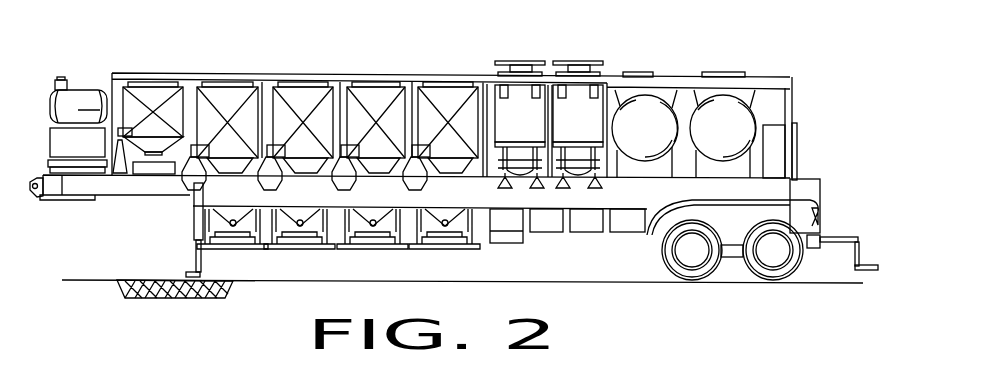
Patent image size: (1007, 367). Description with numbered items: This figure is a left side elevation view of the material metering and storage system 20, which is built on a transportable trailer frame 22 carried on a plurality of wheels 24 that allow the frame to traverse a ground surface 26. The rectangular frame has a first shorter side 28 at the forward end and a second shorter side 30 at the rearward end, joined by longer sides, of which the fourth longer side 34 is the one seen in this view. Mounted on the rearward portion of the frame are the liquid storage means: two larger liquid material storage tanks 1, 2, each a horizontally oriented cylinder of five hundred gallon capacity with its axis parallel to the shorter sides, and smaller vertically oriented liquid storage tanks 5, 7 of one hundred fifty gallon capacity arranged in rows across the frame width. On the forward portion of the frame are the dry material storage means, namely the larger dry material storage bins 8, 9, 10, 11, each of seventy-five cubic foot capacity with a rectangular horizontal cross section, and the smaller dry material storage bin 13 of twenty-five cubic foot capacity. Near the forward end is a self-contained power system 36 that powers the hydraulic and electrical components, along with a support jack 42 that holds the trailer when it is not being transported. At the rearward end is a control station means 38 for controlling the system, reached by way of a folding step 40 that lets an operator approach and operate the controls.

The larger liquid material storage tank 1 is at (725, 107).
The larger liquid material storage tank 2 is at (646, 105).
The smaller liquid storage tank 5 is at (577, 95).
The smaller liquid storage tank 7 is at (518, 92).
The larger dry material storage bin 8 is at (443, 95).
The larger dry material storage bin 9 is at (370, 95).
The larger dry material storage bin 10 is at (298, 95).
The larger dry material storage bin 11 is at (226, 96).
The smaller dry material storage bin 13 is at (150, 95).
The material metering and storage system 20 is at (630, 58).
The transportable trailer frame 22 is at (124, 192).
The wheels 24 is at (770, 276).
The ground surface 26 is at (128, 283).
The first shorter side 28 is at (35, 198).
The second shorter side 30 is at (820, 190).
The fourth longer side 34 is at (148, 186).
The self-contained power system 36 is at (86, 82).
The control station means 38 is at (797, 129).
The folding step 40 is at (869, 265).
The support jack 42 is at (191, 259).